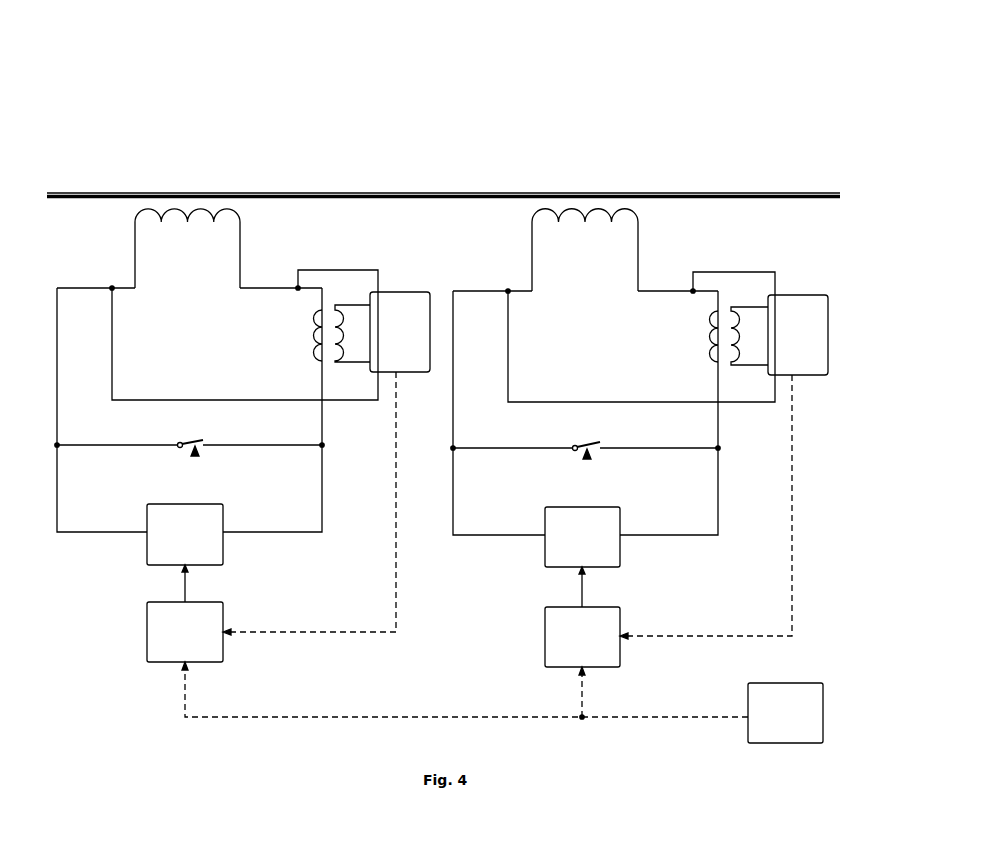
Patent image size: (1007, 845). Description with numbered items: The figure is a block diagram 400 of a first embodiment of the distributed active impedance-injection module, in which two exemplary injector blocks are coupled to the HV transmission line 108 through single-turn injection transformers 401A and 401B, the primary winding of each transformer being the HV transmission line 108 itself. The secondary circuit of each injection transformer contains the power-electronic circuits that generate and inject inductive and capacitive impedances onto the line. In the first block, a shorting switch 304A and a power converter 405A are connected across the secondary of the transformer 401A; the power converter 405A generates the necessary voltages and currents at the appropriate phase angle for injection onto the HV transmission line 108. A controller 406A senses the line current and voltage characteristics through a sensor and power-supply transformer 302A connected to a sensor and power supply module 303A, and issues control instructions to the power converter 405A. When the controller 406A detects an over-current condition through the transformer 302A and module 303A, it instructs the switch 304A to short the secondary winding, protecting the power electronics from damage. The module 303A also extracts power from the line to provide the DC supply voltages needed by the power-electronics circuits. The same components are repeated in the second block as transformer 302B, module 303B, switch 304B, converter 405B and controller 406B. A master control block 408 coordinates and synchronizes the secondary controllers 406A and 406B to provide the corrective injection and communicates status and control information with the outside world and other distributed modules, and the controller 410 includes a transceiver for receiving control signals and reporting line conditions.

The block diagram 400 is at (579, 30).
The HV transmission line 108 is at (443, 170).
The single-turn injection transformer 401A is at (187, 261).
The single-turn injection transformer 401B is at (585, 256).
The sensor and power-supply transformer 302A is at (330, 300).
The sensor and power-supply transformer 302B is at (754, 297).
The sensor and power supply module 303A is at (388, 375).
The sensor and power supply module 303B is at (785, 378).
The shorting switch 304A is at (190, 440).
The shorting switch 304B is at (585, 436).
The power converter 405A is at (190, 502).
The power converter 405B is at (553, 522).
The controller 406A is at (147, 632).
The controller 406B is at (545, 638).
The master control block 408 is at (760, 683).
The controller 410 is at (465, 727).